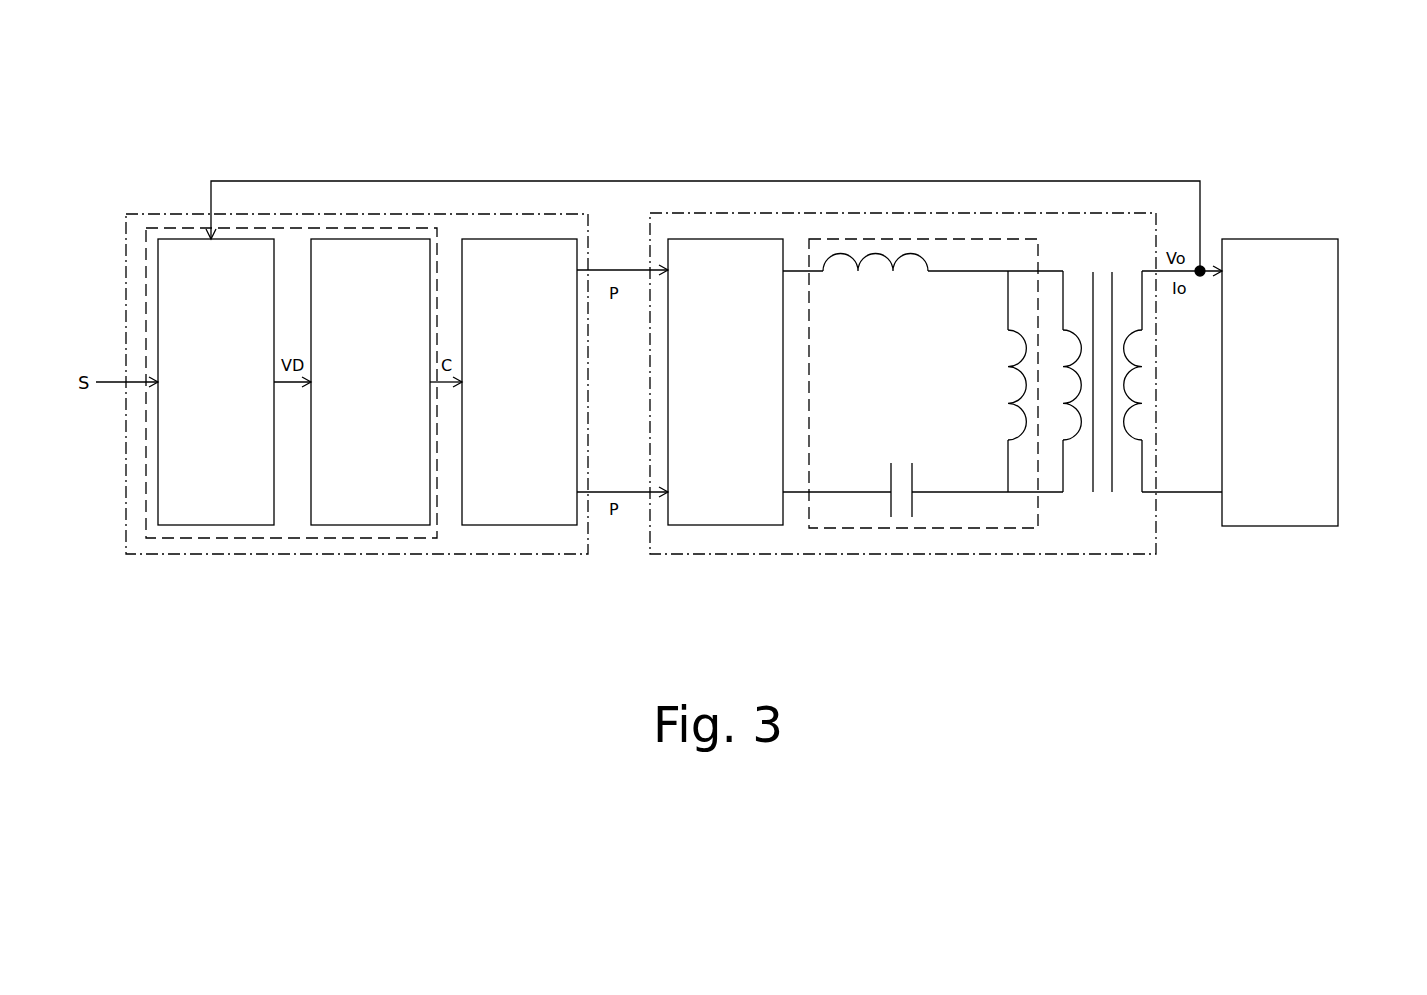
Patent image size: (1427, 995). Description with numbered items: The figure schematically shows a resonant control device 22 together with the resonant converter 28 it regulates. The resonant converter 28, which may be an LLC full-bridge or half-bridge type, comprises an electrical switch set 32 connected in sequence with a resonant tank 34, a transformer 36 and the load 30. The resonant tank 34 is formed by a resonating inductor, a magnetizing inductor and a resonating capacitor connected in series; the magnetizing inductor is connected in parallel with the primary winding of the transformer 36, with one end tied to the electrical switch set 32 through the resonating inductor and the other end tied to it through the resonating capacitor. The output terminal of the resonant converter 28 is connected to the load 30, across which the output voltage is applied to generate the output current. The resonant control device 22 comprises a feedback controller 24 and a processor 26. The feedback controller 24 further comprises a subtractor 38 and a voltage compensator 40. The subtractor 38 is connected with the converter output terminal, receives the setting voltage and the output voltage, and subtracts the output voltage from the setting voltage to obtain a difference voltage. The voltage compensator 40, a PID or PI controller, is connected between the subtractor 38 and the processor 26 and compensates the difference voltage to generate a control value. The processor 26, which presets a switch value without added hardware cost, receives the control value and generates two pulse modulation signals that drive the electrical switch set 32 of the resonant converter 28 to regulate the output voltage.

The resonant control device 22 is at (543, 214).
The feedback controller 24 is at (176, 228).
The processor 26 is at (545, 525).
The resonant converter 28 is at (1045, 213).
The load 30 is at (1338, 293).
The electrical switch set 32 is at (738, 239).
The resonant tank 34 is at (990, 239).
The transformer 36 is at (1112, 308).
The subtractor 38 is at (230, 525).
The voltage compensator 40 is at (375, 525).